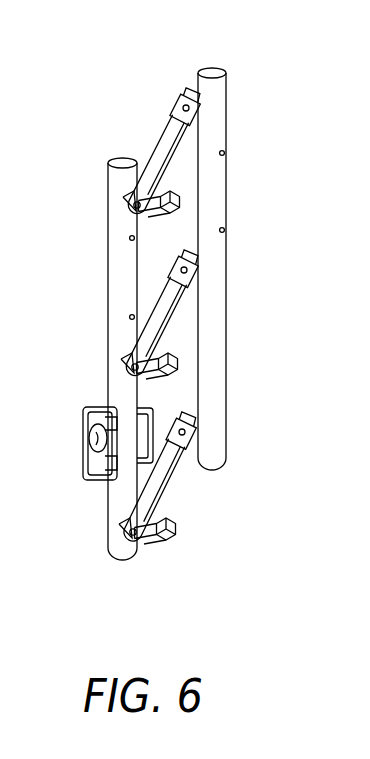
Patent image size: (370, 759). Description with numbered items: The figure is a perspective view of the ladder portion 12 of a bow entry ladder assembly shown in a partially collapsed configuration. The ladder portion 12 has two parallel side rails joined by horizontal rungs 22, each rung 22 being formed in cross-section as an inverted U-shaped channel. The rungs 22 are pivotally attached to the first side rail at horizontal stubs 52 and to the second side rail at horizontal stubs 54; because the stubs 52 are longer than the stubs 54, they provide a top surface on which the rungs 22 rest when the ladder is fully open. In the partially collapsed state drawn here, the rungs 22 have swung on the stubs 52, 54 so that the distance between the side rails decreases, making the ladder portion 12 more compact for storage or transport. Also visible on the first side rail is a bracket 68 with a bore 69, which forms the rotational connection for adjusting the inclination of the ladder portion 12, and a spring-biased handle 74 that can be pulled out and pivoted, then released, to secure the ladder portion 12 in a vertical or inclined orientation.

The ladder portion 12 is at (275, 160).
The rung 22 is at (150, 152).
The horizontal stub 52 is at (150, 222).
The horizontal stub 54 is at (193, 87).
The bracket 68 is at (100, 406).
The bore 69 is at (95, 438).
The spring-biased handle 74 is at (152, 410).